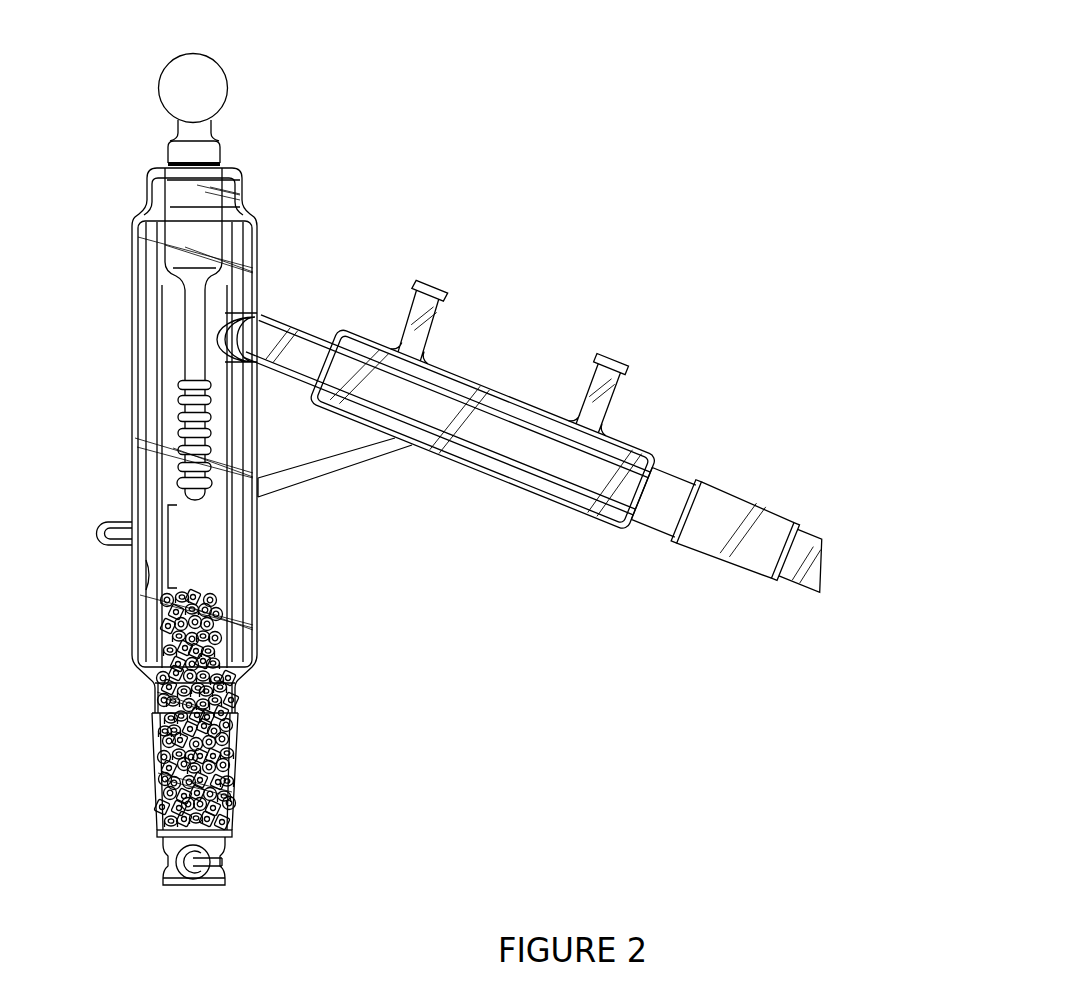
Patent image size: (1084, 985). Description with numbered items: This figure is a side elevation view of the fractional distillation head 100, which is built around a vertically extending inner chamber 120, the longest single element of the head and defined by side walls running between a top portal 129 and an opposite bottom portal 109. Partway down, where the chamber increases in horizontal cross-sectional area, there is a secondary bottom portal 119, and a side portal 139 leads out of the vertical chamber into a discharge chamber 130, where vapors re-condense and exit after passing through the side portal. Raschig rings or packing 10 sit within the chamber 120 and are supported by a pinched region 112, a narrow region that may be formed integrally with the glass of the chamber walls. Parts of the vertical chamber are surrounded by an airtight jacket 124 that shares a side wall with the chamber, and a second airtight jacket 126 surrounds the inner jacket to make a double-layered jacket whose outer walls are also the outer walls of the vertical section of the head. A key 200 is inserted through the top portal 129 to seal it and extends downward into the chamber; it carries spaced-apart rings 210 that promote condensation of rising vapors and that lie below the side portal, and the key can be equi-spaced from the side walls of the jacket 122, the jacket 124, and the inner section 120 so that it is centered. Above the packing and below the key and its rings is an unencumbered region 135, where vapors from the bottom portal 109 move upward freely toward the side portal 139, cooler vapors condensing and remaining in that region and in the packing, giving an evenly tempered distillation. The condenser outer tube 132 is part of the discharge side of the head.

The fractional distillation head 100 is at (121, 56).
The key 200 is at (192, 103).
The top portal 129 is at (163, 167).
The jacket 122 is at (137, 292).
The airtight jacket 124 is at (153, 342).
The side portal 139 is at (258, 314).
The discharge chamber 130 is at (483, 418).
The condenser jacket 132 is at (523, 487).
The rings 210 is at (185, 417).
The vertically extending inner chamber 120 is at (167, 467).
The unencumbered region 135 is at (165, 524).
The second airtight jacket 126 is at (148, 574).
The secondary bottom portal 119 is at (150, 688).
The Raschig rings or packing 10 is at (183, 746).
The pinched region 112 is at (178, 865).
The bottom portal 109 is at (178, 887).